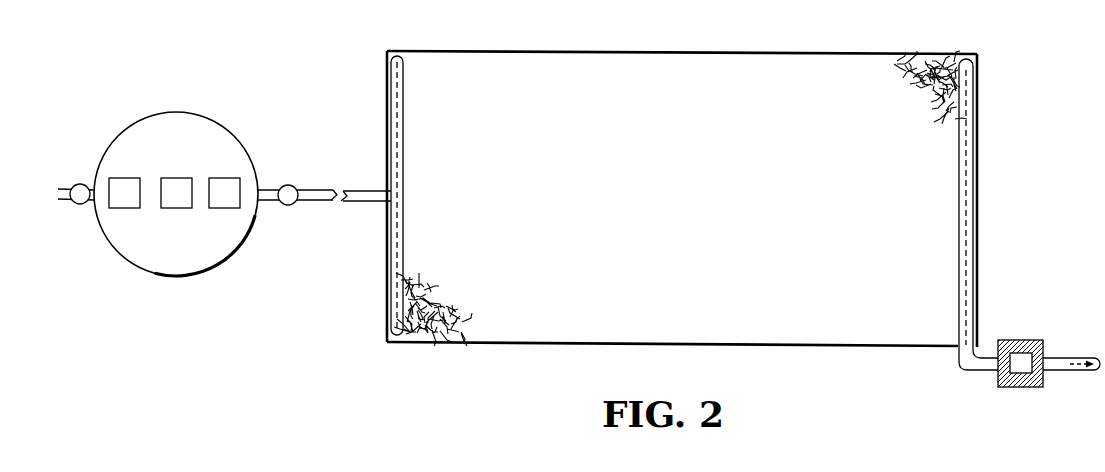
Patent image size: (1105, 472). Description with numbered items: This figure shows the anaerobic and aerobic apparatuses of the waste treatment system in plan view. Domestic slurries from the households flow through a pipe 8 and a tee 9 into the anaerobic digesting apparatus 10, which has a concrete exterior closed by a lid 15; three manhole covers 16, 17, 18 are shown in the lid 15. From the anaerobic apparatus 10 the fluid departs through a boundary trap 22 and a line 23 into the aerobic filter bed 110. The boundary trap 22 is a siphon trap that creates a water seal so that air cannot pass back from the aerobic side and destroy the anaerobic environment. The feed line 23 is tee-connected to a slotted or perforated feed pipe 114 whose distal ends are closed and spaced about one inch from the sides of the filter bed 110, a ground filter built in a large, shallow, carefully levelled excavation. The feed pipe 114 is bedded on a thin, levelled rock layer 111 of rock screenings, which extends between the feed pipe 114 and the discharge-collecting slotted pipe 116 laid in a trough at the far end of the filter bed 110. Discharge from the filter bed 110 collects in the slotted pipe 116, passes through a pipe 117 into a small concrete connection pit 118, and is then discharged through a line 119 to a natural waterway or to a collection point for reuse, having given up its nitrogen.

The pipe 8 is at (58, 187).
The tee 9 is at (73, 205).
The anaerobic digesting apparatus 10 is at (151, 101).
The lid 15 is at (182, 249).
The manhole cover 16 is at (132, 178).
The manhole cover 17 is at (178, 178).
The manhole cover 18 is at (221, 178).
The boundary trap 22 is at (287, 184).
The line 23 is at (342, 202).
The aerobic filter bed 110 is at (508, 354).
The rock layer 111 is at (453, 312).
The slotted pipe 114 is at (401, 85).
The slotted pipe 116 is at (975, 57).
The pipe 117 is at (982, 358).
The concrete connection pit 118 is at (1042, 340).
The line 119 is at (1063, 372).